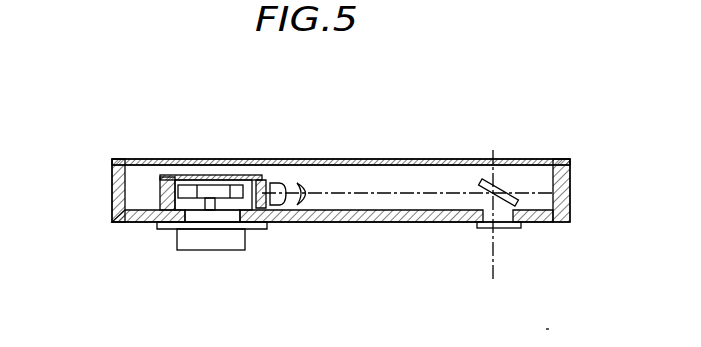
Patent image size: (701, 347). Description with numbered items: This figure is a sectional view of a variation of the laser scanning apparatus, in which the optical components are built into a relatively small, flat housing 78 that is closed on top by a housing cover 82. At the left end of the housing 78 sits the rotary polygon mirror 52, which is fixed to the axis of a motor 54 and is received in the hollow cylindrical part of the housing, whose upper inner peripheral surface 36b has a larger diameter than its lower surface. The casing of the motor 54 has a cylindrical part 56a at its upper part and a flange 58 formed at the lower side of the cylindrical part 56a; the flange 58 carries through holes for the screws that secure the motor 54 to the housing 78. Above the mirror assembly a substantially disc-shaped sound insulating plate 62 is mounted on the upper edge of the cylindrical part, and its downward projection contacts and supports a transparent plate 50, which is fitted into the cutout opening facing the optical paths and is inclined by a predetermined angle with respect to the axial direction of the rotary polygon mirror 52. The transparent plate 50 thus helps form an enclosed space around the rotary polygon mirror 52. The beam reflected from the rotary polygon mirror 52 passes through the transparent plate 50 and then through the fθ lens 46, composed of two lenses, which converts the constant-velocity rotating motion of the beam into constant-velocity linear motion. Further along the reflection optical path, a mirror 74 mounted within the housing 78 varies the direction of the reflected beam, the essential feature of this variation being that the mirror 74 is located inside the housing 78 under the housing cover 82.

The housing 78 is at (112, 184).
The housing cover 82 is at (397, 160).
The upper inner peripheral surface 36b is at (177, 178).
The rotary polygon mirror 52 is at (208, 190).
The sound insulating plate 62 is at (236, 182).
The transparent plate 50 is at (268, 210).
The fθ lens 46 is at (308, 184).
The mirror 74 is at (495, 187).
The cylindrical part 56a is at (193, 213).
The flange 58 is at (157, 228).
The motor 54 is at (225, 240).